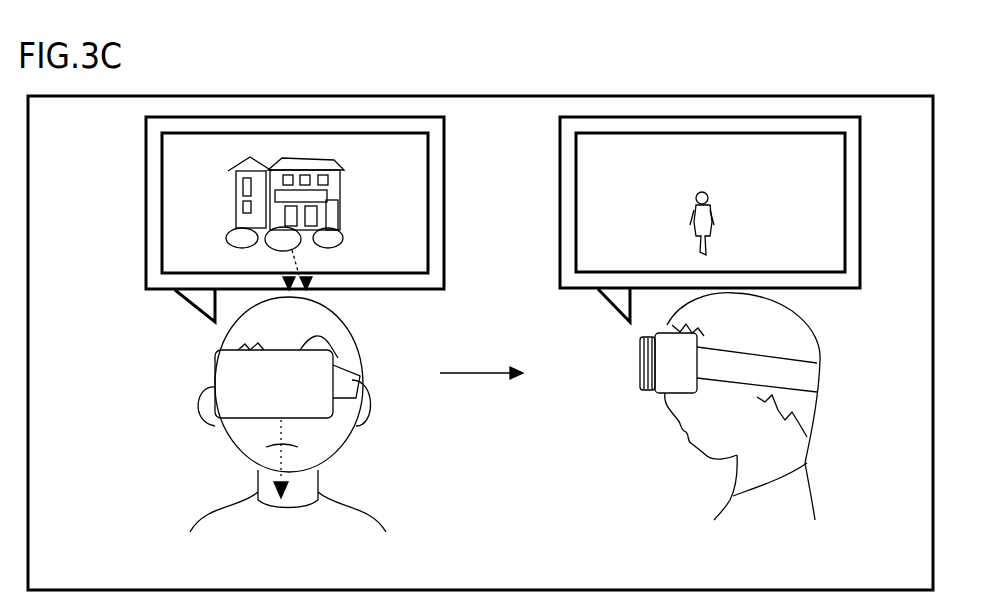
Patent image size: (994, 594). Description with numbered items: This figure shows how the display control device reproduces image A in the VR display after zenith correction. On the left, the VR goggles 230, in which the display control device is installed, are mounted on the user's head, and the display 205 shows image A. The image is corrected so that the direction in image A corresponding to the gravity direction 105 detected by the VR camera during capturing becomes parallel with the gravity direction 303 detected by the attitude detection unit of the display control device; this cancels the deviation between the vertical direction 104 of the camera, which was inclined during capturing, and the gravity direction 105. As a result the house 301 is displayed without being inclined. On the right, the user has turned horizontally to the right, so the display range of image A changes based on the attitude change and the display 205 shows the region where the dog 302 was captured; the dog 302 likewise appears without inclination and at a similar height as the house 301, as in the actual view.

The vertical direction 104 is at (305, 274).
The gravity direction 105 is at (297, 276).
The display 205 is at (147, 168).
The VR goggles 230 is at (215, 364).
The house 301 is at (337, 200).
The dog 302 is at (716, 214).
The gravity direction 303 is at (284, 425).